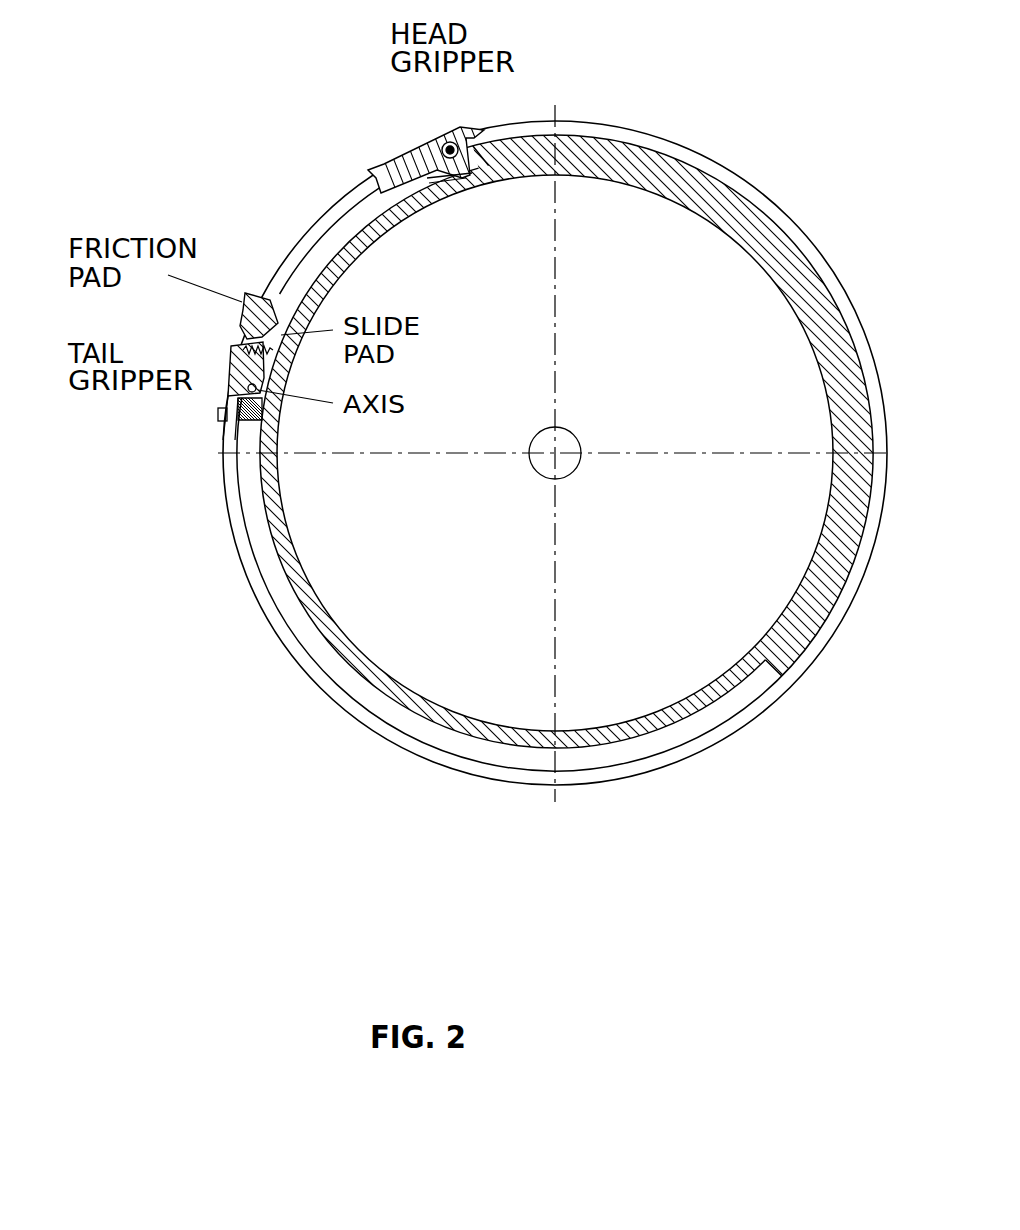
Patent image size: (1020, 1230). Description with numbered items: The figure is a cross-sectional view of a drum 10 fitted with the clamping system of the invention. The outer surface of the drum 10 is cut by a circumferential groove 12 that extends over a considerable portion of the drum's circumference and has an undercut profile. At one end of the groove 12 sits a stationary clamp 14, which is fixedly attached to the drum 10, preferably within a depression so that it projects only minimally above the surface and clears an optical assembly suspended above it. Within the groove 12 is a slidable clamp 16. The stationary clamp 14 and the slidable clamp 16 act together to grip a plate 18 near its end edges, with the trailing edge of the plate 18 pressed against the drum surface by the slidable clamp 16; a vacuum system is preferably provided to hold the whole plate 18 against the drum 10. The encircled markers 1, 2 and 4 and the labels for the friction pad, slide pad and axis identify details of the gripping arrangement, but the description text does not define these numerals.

The friction pad 1 is at (250, 292).
The slide pad / plate end 2 is at (333, 257).
The tail gripper stop 4 is at (217, 418).
The drum 10 is at (731, 198).
The groove 12 is at (337, 212).
The stationary clamp 14 is at (388, 104).
The slidable clamp 16 is at (226, 345).
The plate 18 is at (815, 247).